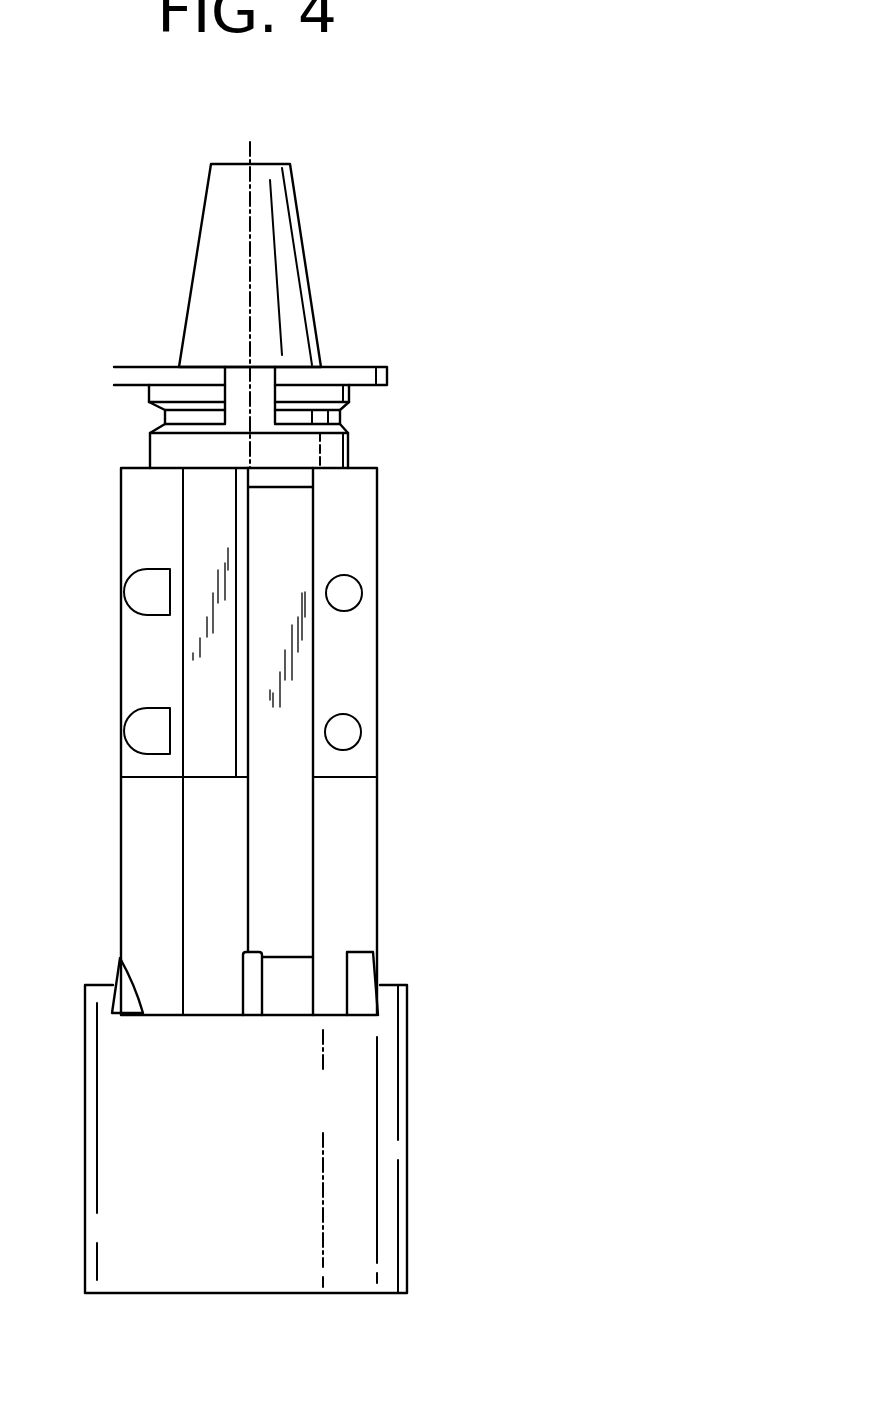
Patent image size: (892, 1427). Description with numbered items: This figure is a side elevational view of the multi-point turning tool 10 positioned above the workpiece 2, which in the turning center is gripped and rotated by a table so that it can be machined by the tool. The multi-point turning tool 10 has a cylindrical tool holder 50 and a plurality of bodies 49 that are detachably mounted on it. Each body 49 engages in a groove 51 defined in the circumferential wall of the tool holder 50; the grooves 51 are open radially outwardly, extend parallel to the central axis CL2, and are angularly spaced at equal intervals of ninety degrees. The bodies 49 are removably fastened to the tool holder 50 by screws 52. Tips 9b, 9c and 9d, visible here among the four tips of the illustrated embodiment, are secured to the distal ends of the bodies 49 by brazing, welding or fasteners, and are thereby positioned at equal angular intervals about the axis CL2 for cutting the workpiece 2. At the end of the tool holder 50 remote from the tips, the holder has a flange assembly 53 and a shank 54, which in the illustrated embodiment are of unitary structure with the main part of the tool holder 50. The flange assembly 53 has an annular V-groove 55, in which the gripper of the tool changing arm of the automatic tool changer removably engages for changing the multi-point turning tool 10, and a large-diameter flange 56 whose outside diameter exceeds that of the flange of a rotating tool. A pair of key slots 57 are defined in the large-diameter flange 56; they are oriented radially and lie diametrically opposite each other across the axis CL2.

The workpiece 2 is at (407, 1115).
The tip 9b is at (130, 1017).
The tip 9c is at (262, 987).
The tip 9d is at (362, 1018).
The multi-point turning tool 10 is at (518, 522).
The body 49 is at (273, 823).
The tool holder 50 is at (377, 698).
The groove 51 is at (313, 872).
The screw 52 is at (362, 593).
The flange assembly 53 is at (281, 370).
The shank 54 is at (301, 218).
The annular V-groove 55 is at (162, 413).
The large-diameter flange 56 is at (368, 368).
The key slot 57 is at (228, 397).
The central axis CL2 is at (250, 310).